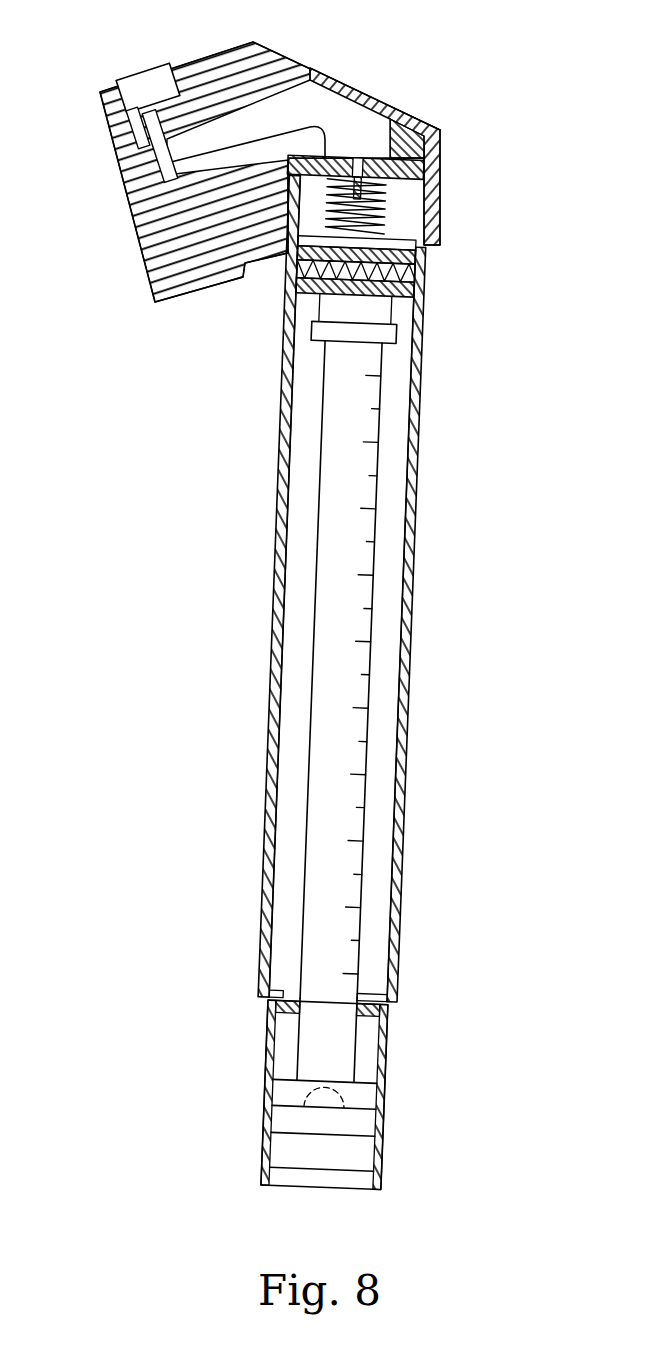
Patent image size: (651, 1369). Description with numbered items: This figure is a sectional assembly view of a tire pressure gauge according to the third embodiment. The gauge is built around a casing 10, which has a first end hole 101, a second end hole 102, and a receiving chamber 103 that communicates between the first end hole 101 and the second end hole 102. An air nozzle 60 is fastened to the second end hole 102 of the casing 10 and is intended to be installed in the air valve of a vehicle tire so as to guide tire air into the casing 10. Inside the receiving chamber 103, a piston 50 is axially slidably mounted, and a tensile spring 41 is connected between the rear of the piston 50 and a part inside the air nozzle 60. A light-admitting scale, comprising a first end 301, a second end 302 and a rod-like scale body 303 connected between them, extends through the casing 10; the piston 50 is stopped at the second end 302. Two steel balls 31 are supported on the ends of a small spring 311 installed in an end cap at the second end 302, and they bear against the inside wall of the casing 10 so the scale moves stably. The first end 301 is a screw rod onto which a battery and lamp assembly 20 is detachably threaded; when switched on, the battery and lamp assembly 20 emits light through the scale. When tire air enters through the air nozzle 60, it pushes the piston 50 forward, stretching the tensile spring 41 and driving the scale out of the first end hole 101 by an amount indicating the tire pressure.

The air nozzle 60 is at (109, 58).
The casing 10 is at (222, 615).
The receiving chamber 103 is at (292, 745).
The first end hole 101 is at (262, 1010).
The second end hole 102 is at (428, 176).
The tensile spring 41 is at (388, 202).
The piston 50 is at (415, 242).
The steel balls 31 is at (406, 272).
The small spring 311 is at (387, 294).
The second end 302 is at (390, 357).
The rod-like scale body 303 is at (366, 672).
The first end 301 is at (350, 1060).
The battery and lamp assembly 20 is at (387, 1122).